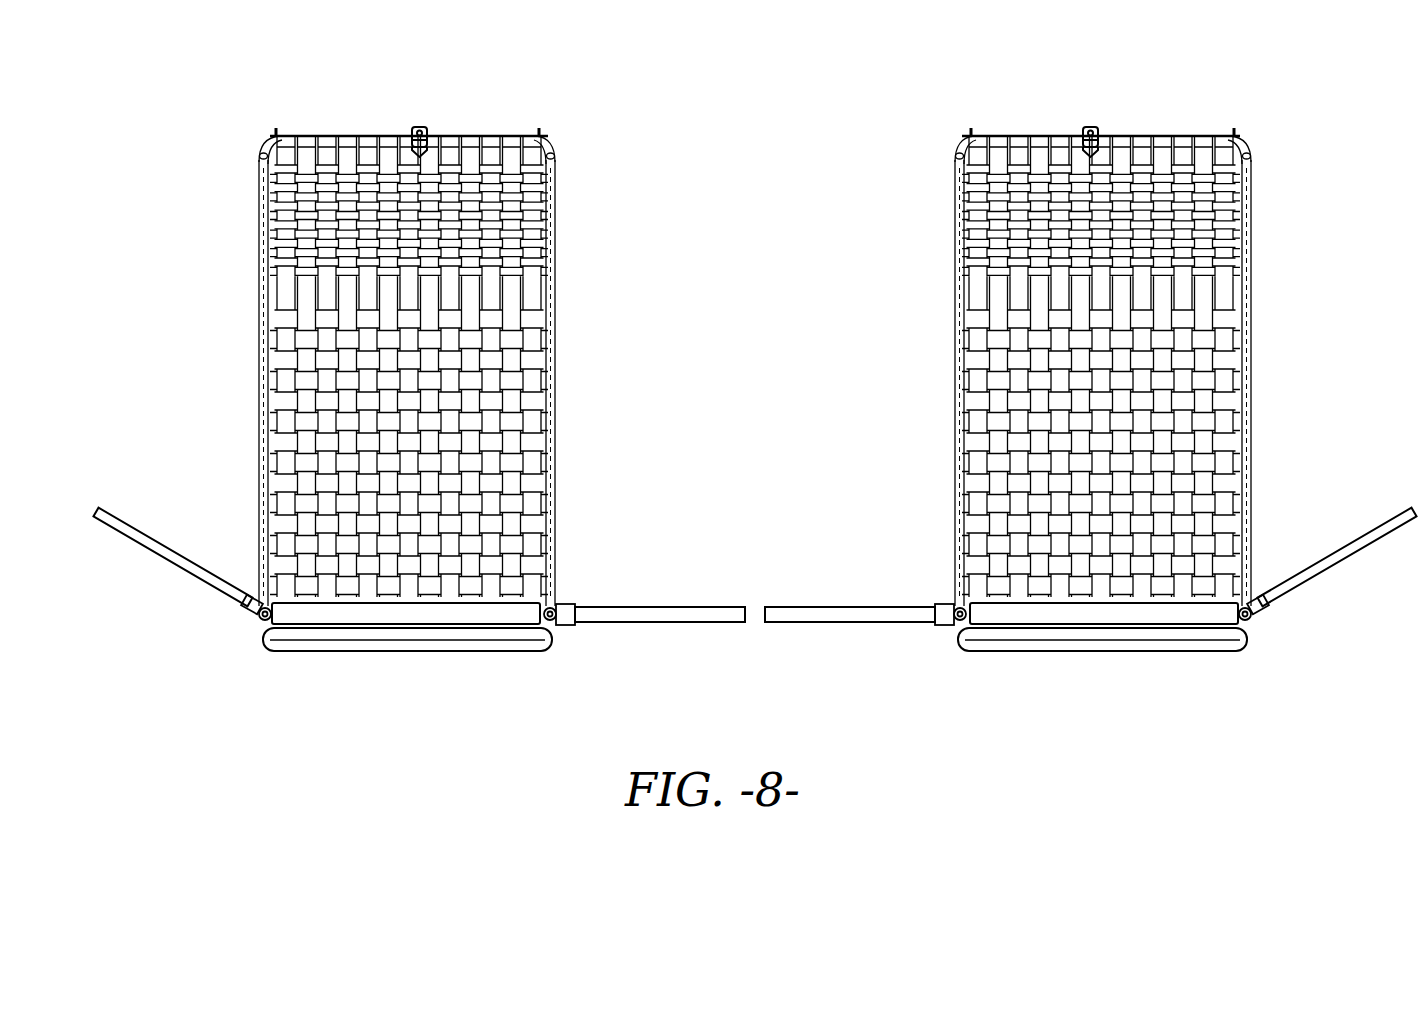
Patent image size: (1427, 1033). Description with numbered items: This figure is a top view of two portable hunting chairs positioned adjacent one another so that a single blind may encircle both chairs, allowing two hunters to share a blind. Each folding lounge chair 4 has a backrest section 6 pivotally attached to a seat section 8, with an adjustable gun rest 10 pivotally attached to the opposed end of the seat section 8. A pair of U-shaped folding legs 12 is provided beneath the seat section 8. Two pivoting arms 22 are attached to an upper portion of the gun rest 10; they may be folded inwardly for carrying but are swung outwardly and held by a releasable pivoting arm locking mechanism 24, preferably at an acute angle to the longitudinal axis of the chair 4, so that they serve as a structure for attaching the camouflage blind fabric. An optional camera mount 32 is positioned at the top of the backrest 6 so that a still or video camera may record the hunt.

The folding lounge chair 4 is at (255, 209).
The backrest section 6 is at (512, 213).
The seat section 8 is at (498, 383).
The adjustable gun rest 10 is at (342, 612).
The U-shaped folding legs 12 is at (478, 645).
The pivoting arms 22 is at (165, 548).
The releasable pivoting arm locking mechanism 24 is at (258, 622).
The camera mount 32 is at (411, 137).